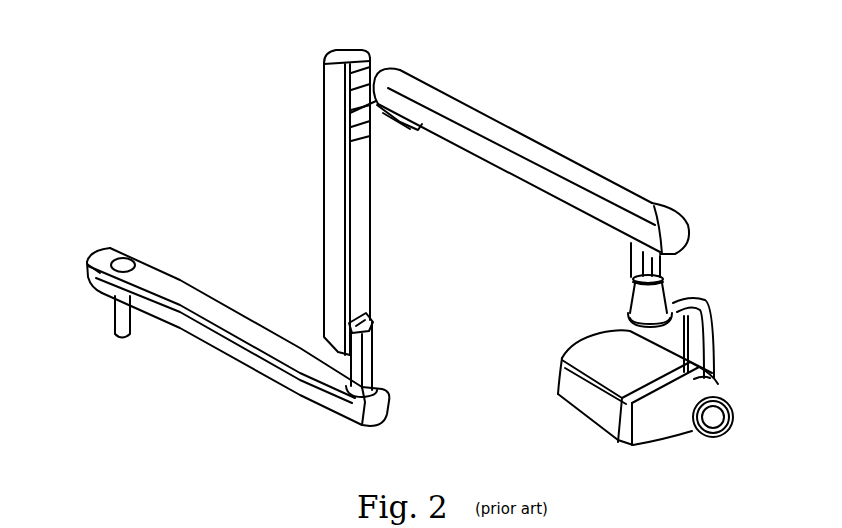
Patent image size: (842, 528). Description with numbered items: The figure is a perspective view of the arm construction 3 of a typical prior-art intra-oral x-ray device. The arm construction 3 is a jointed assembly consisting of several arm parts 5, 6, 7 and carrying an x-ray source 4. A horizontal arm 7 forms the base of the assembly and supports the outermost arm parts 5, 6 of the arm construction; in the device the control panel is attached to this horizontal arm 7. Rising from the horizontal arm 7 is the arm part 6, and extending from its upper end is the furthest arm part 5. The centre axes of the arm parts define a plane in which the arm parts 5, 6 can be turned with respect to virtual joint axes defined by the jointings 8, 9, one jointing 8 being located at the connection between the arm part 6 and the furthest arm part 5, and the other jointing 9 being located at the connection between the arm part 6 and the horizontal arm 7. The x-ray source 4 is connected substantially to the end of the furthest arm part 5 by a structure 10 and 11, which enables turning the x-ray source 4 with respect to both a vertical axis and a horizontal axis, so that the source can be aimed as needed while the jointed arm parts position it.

The arm construction 3 is at (505, 80).
The x-ray source 4 is at (578, 411).
The arm part 5 is at (570, 168).
The arm part 6 is at (324, 192).
The horizontal arm 7 is at (220, 354).
The jointing 8 is at (372, 60).
The jointing 9 is at (374, 362).
The structure 10 is at (630, 265).
The structure 11 is at (666, 281).